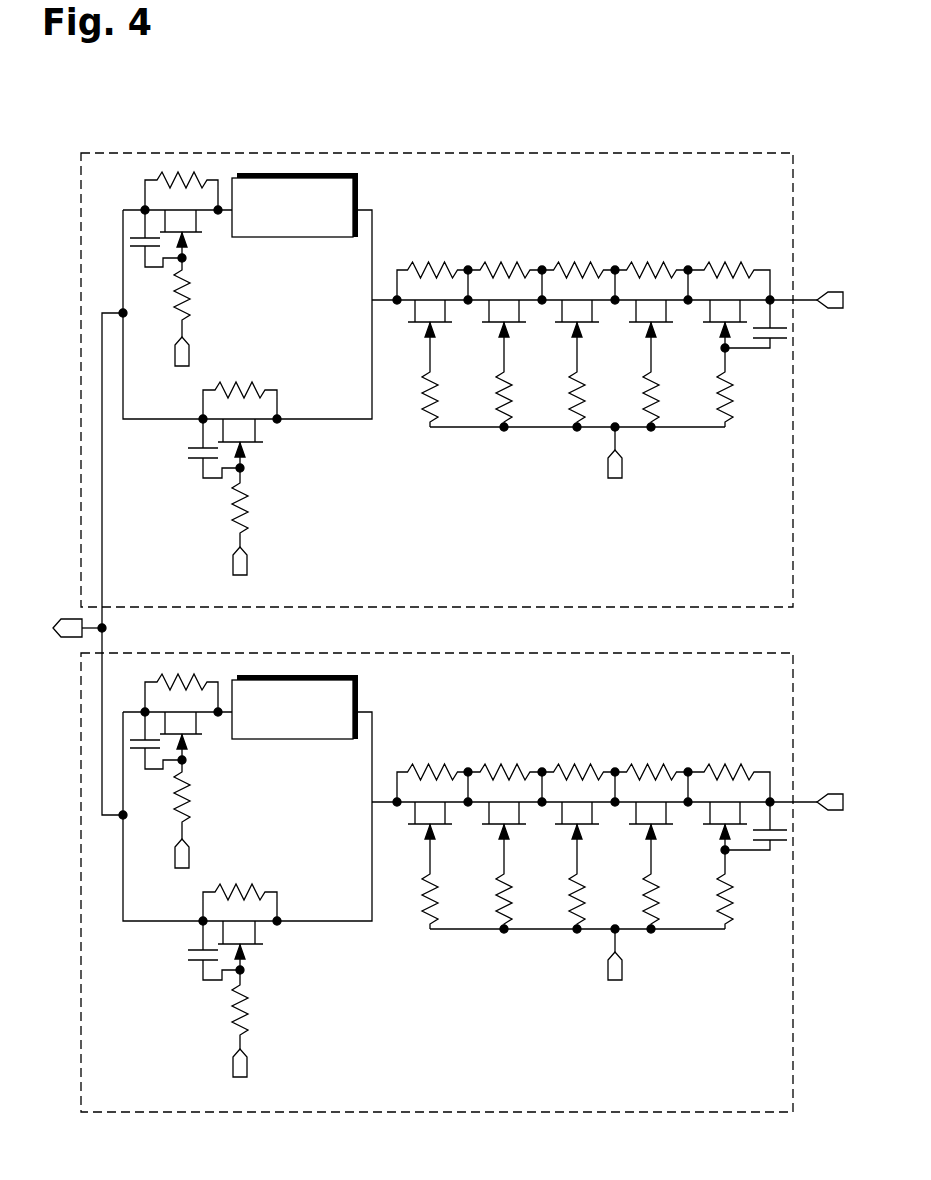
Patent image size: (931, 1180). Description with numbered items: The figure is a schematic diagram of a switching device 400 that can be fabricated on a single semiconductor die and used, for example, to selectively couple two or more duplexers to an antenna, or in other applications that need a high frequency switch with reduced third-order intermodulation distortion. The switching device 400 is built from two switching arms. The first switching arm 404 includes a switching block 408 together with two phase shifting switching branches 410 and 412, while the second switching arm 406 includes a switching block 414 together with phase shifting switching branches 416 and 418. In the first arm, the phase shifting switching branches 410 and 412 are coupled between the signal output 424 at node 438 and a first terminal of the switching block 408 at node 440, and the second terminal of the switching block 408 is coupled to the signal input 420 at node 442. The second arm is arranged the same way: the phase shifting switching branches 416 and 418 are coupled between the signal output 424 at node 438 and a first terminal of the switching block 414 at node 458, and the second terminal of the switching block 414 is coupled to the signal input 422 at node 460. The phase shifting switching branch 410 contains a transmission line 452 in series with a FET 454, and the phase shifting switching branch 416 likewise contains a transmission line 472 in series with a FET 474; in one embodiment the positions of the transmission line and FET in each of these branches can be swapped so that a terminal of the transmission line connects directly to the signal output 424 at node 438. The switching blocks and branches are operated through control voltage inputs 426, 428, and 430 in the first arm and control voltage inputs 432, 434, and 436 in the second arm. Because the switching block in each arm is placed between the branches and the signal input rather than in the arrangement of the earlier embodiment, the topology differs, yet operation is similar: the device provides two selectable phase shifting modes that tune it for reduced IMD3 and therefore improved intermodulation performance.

The switching device 400 is at (780, 101).
The switching arm 404 is at (337, 153).
The switching arm 406 is at (462, 909).
The switching block 408 is at (553, 319).
The phase shifting switching branch 410 is at (310, 295).
The phase shifting switching branch 412 is at (281, 478).
The switching block 414 is at (553, 821).
The phase shifting switching branch 416 is at (310, 797).
The phase shifting switching branch 418 is at (281, 980).
The signal input 420 is at (830, 290).
The signal input 422 is at (824, 775).
The signal output 424 is at (70, 617).
The control voltage input 426 is at (608, 466).
The control voltage input 428 is at (189, 352).
The control voltage input 430 is at (233, 558).
The control voltage input 432 is at (583, 955).
The control voltage input 434 is at (214, 853).
The control voltage input 436 is at (207, 1063).
The node 438 is at (108, 628).
The node 440 is at (393, 302).
The node 442 is at (771, 297).
The transmission line 452 is at (316, 237).
The FET 454 is at (198, 218).
The node 458 is at (345, 812).
The node 460 is at (755, 793).
The transmission line 472 is at (295, 727).
The FET 474 is at (198, 740).